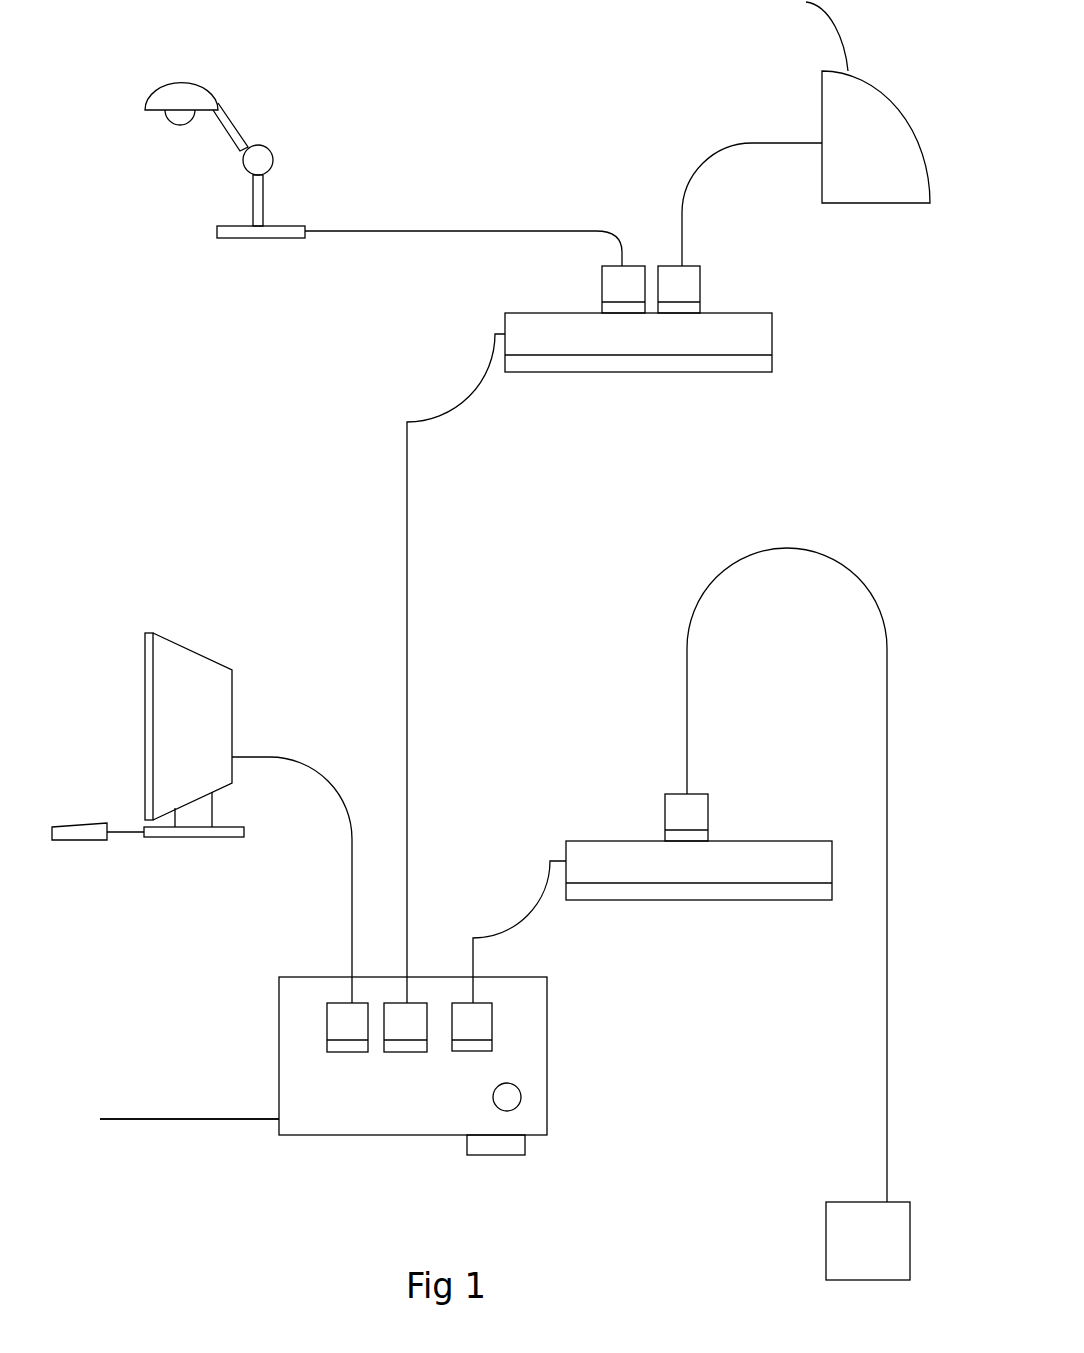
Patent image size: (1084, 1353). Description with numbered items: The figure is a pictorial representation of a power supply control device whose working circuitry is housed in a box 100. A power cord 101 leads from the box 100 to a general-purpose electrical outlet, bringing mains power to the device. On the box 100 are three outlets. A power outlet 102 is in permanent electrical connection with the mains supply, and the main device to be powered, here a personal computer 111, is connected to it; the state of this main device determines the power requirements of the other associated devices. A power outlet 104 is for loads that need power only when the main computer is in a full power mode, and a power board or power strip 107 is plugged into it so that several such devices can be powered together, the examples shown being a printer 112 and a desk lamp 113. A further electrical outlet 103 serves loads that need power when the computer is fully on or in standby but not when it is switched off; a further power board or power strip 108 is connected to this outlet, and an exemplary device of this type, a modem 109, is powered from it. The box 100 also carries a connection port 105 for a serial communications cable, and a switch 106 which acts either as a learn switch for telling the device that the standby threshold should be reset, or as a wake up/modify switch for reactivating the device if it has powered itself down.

The box 100 is at (548, 1037).
The power cord 101 is at (215, 1120).
The power outlet 102 is at (325, 1023).
The further electrical outlet 103 is at (493, 1023).
The power outlet 104 is at (405, 1053).
The connection port 105 is at (525, 1142).
The switch 106 is at (522, 1087).
The power strip 107 is at (650, 373).
The power strip 108 is at (722, 900).
The modem 109 is at (826, 1230).
The personal computer 111 is at (198, 652).
The printer 112 is at (822, 95).
The desk lamp 113 is at (258, 197).